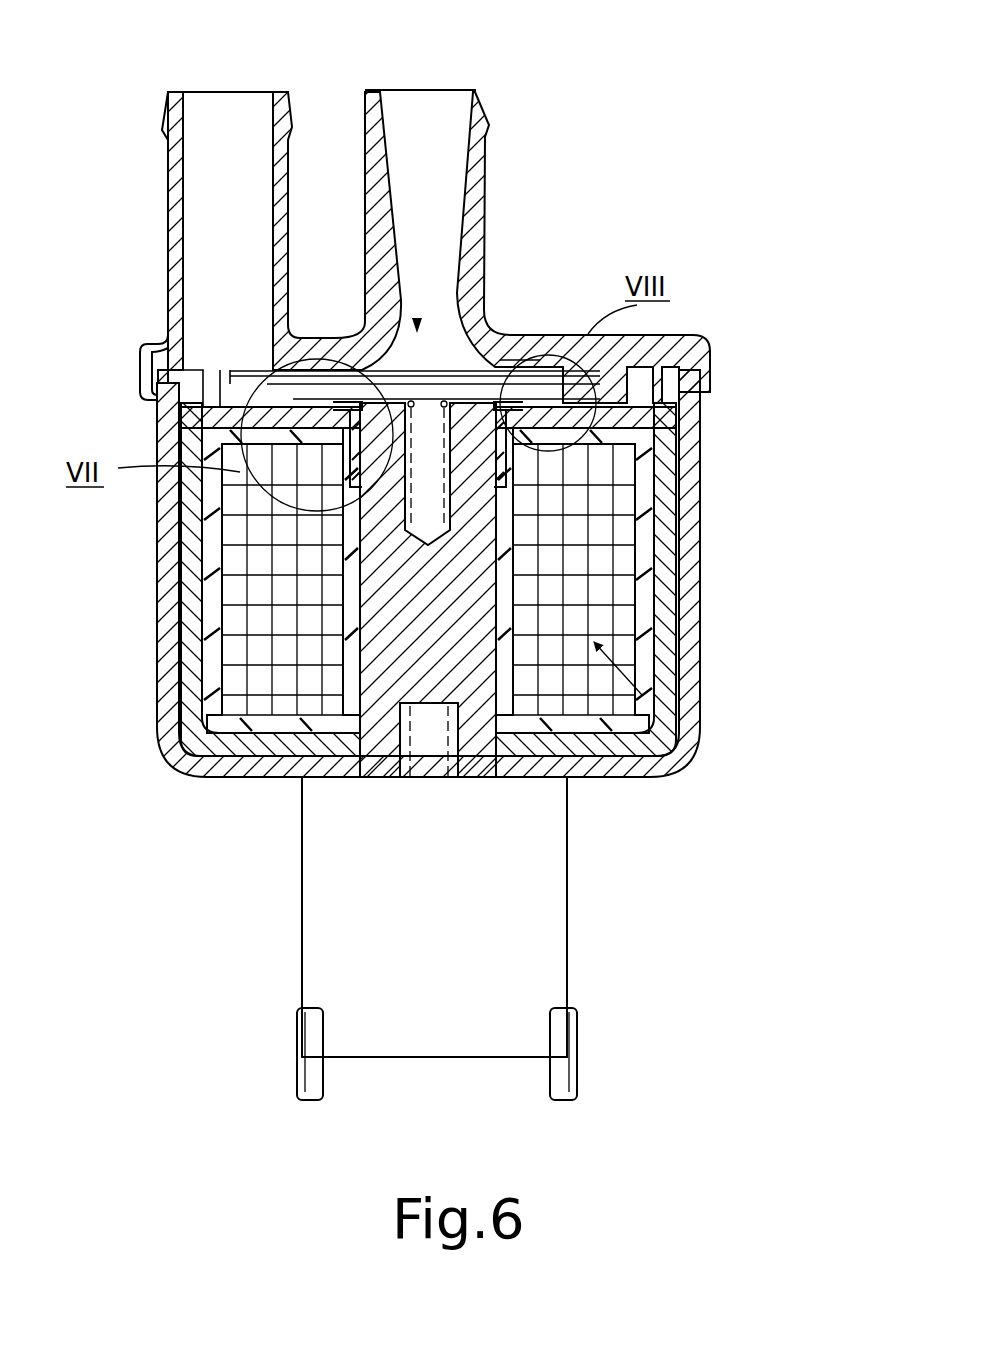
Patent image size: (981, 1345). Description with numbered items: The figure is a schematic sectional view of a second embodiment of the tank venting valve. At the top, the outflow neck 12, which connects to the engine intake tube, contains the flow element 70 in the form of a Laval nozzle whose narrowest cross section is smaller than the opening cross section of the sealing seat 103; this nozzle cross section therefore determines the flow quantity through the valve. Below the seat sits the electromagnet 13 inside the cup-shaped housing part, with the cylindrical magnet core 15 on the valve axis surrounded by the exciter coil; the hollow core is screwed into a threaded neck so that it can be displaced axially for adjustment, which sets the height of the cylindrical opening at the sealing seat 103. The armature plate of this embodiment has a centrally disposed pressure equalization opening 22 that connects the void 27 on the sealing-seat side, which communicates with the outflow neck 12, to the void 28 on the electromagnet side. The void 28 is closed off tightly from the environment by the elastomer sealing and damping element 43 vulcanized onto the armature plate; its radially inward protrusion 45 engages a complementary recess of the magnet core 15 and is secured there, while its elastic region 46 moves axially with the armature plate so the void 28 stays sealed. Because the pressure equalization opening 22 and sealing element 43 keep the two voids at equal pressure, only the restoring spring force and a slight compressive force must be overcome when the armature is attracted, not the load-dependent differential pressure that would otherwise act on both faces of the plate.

The outflow neck 12 is at (440, 108).
The electromagnet 13 is at (668, 738).
The magnet core 15 is at (387, 697).
The pressure equalization opening 22 is at (373, 340).
The void toward the sealing seat 27 is at (483, 318).
The void toward the electromagnet 28 is at (355, 447).
The sealing and damping element 43 is at (508, 452).
The protrusion 45 is at (497, 775).
The elastic region 46 is at (343, 400).
The flow element 70 is at (417, 330).
The sealing seat 103 is at (533, 333).